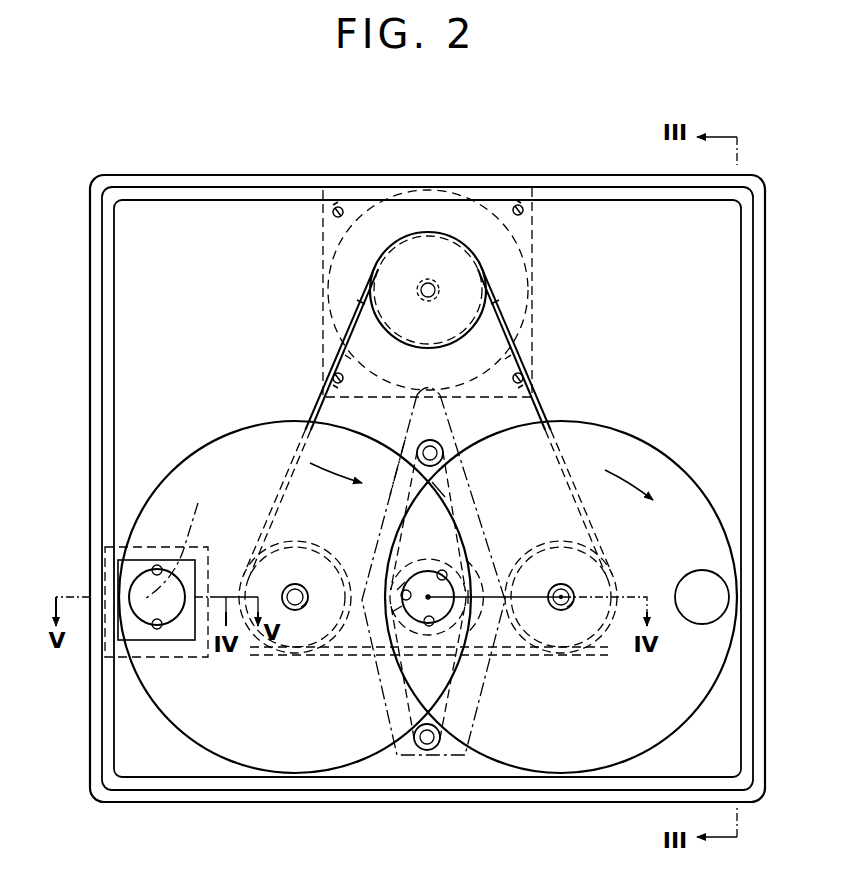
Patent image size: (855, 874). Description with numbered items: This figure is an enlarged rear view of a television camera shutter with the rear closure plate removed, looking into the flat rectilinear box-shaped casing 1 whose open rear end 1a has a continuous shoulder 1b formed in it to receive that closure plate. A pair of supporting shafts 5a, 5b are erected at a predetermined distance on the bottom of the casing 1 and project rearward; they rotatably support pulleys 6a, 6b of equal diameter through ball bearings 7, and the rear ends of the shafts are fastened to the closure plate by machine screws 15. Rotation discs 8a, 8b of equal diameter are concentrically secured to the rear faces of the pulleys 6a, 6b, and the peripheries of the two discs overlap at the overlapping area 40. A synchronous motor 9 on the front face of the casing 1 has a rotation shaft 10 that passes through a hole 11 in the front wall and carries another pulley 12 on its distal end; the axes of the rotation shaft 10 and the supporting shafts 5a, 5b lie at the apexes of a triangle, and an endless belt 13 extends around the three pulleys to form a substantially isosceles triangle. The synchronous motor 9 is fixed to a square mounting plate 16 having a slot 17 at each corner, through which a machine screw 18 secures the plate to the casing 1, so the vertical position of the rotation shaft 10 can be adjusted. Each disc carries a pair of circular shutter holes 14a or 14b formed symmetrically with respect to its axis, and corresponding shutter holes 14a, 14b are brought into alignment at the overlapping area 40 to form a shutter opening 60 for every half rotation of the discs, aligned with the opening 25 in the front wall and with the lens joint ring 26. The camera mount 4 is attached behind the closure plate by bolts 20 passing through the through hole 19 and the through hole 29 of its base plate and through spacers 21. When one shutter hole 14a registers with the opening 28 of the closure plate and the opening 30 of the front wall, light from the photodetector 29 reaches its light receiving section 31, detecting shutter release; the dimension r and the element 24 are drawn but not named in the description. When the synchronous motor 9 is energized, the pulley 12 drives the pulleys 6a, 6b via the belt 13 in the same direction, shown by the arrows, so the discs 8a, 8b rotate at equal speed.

The casing 1 is at (180, 177).
The open rear end 1a is at (222, 170).
The continuous shoulder 1b is at (148, 192).
The camera mount 4 is at (478, 506).
The supporting shaft 5a is at (296, 585).
The supporting shaft 5b is at (563, 585).
The pulley 6a is at (290, 548).
The pulley 6b is at (520, 548).
The ball bearing 7 is at (304, 607).
The rotation disc 8a is at (233, 432).
The rotation disc 8b is at (612, 429).
The synchronous motor 9 is at (528, 250).
The rotation shaft 10 is at (433, 286).
The hole 11 is at (437, 301).
The pulley 12 is at (432, 232).
The endless belt 13 is at (528, 383).
The shutter hole 14a is at (158, 566).
The shutter hole 14b is at (441, 570).
The machine screw 15 is at (291, 612).
The mounting plate 16 is at (530, 290).
The slot 17 is at (330, 215).
The machine screw 18 is at (343, 222).
The through hole 19 is at (366, 739).
The bolt 20 is at (441, 446).
The spacer 21 is at (421, 445).
The hub flange 24 is at (470, 586).
The opening 25 is at (397, 590).
The lens joint ring 26 is at (396, 610).
The opening 28 is at (176, 641).
The photodetector 29 is at (179, 540).
The opening 30 is at (157, 599).
The light receiving section 31 is at (209, 548).
The overlapping area 40 is at (436, 492).
The shutter opening 60 is at (428, 597).
The radius r is at (537, 610).